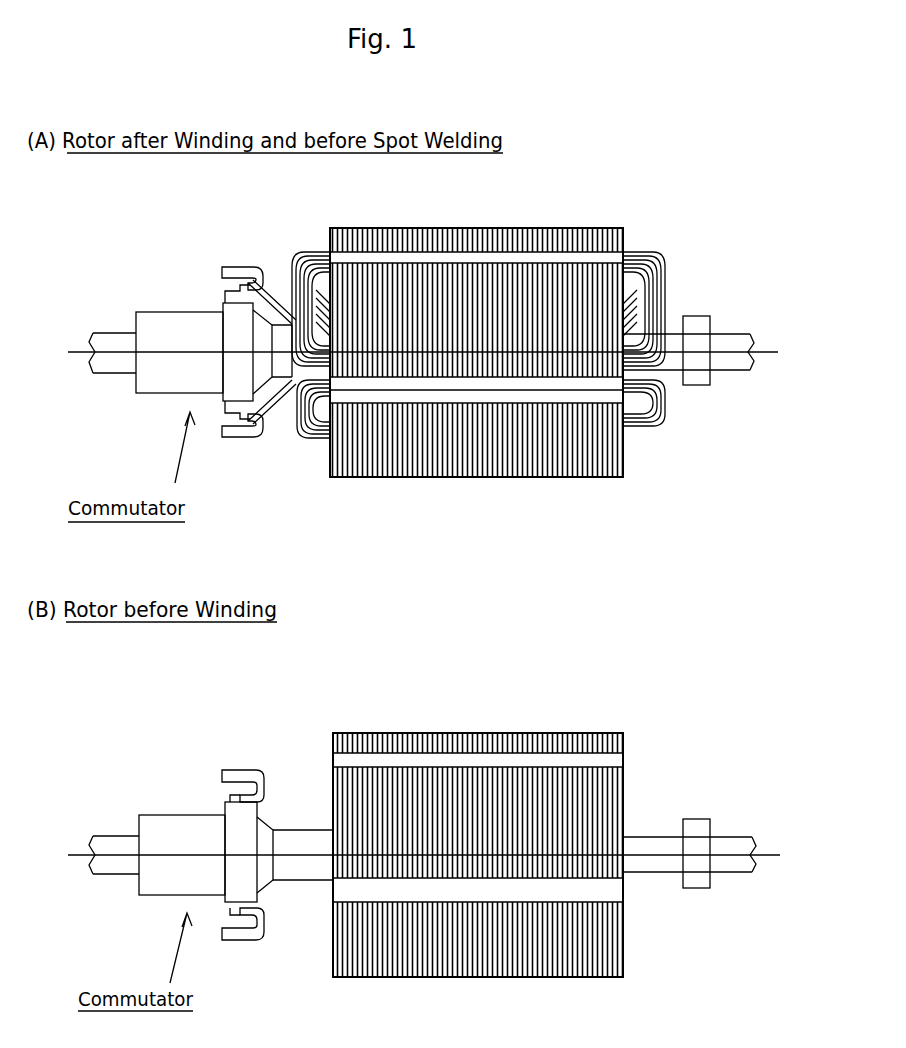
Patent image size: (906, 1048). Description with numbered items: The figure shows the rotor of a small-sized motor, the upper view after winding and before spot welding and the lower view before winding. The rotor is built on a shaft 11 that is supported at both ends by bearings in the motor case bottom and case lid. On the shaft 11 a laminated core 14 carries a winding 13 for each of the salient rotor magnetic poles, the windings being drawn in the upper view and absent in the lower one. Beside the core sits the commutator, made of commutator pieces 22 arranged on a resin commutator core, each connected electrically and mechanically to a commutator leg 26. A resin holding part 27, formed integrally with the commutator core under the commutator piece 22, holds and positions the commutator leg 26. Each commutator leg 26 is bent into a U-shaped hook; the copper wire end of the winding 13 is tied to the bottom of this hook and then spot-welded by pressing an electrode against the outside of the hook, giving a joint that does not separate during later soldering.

The shaft 11 is at (727, 337).
The winding 13 is at (632, 280).
The laminated core 14 is at (603, 453).
The commutator piece 22 is at (178, 328).
The commutator leg 26 is at (230, 433).
The resin holding part 27 is at (235, 322).